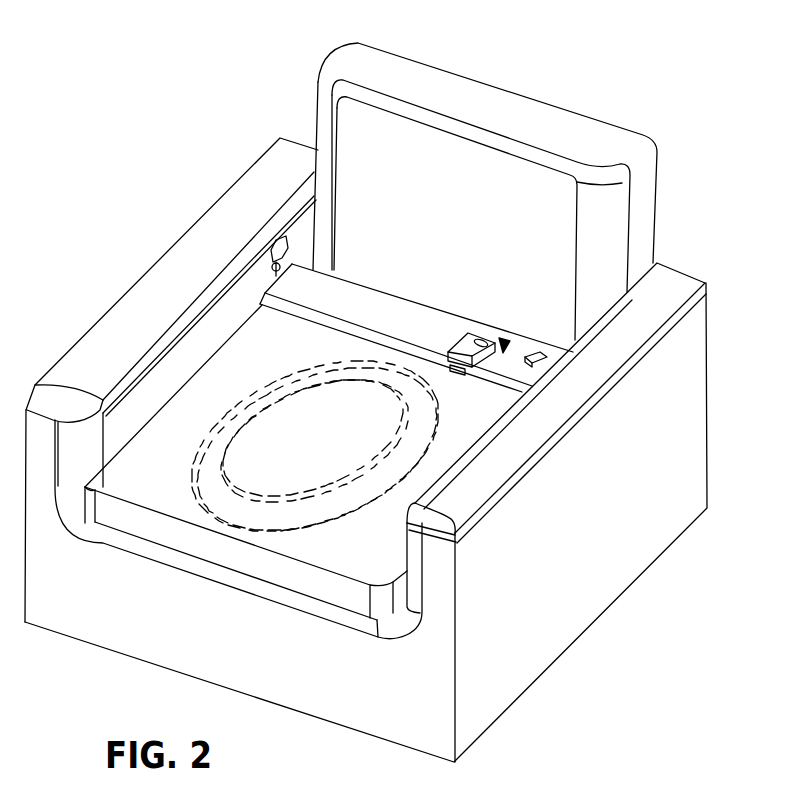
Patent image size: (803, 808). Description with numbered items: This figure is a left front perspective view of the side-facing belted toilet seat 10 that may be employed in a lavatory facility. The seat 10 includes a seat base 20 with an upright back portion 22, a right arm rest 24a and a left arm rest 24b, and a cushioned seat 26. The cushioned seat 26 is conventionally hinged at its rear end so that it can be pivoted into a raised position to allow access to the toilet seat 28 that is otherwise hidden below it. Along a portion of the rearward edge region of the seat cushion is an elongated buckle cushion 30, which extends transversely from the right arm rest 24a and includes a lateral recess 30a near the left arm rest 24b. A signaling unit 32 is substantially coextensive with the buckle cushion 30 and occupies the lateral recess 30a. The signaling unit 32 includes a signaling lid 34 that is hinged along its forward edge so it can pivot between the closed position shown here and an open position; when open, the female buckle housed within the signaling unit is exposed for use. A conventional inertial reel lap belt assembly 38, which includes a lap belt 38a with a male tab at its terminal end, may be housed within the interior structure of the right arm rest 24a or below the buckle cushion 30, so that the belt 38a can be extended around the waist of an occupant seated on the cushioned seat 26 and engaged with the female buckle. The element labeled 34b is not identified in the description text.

The side-facing belted toilet seat 10 is at (102, 128).
The seat base 20 is at (239, 648).
The upright back portion 22 is at (394, 169).
The right arm rest 24a is at (115, 345).
The left arm rest 24b is at (663, 302).
The cushioned seat 26 is at (169, 475).
The toilet seat 28 is at (245, 417).
The elongated buckle cushion 30 is at (369, 308).
The lateral recess 30a is at (447, 352).
The signaling unit 32 is at (505, 338).
The signaling lid 34 is at (497, 373).
The latch tab 34b is at (542, 353).
The inertial reel lap belt assembly 38 is at (287, 237).
The lap belt 38a is at (273, 277).